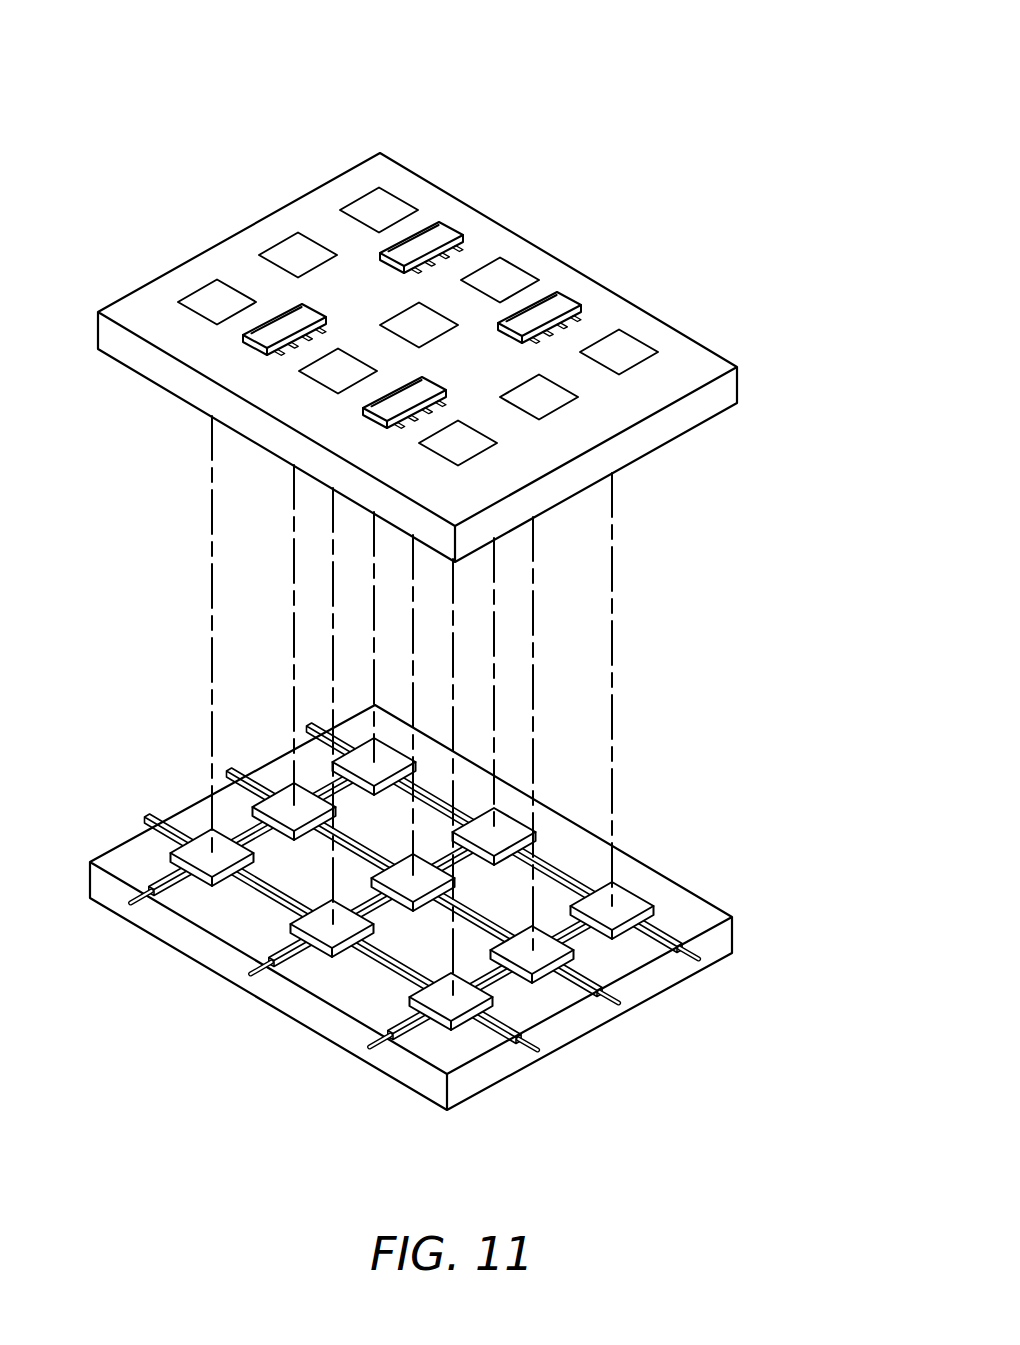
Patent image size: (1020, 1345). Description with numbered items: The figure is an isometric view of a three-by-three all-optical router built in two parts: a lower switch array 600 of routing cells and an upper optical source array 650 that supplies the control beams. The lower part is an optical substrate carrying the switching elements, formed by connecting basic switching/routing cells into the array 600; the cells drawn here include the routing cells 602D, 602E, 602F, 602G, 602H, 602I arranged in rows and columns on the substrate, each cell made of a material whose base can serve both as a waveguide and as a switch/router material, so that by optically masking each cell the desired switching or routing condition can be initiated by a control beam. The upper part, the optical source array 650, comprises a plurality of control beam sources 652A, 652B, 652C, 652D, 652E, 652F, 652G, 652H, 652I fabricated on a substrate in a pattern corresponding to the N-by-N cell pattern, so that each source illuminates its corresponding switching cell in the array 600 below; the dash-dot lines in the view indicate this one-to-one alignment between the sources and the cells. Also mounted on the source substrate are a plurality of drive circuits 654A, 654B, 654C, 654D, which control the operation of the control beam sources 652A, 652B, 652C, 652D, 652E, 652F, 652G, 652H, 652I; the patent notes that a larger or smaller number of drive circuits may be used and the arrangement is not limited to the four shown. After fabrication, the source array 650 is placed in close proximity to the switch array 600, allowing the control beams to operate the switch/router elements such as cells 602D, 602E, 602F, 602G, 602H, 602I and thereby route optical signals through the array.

The optical source array 650 is at (374, 86).
The array of routing cells 600 is at (694, 688).
The control beam source 652A is at (210, 300).
The control beam source 652B is at (293, 252).
The control beam source 652C is at (375, 204).
The control beam source 652D is at (333, 377).
The control beam source 652E is at (413, 323).
The control beam source 652F is at (498, 273).
The control beam source 652G is at (457, 442).
The control beam source 652H is at (542, 397).
The control beam source 652I is at (622, 352).
The drive circuit 654A is at (243, 343).
The drive circuit 654B is at (438, 232).
The drive circuit 654C is at (412, 390).
The drive circuit 654D is at (558, 310).
The routing cell 602D is at (327, 908).
The routing cell 602E is at (408, 867).
The routing cell 602F is at (502, 822).
The routing cell 602G is at (446, 985).
The routing cell 602H is at (527, 928).
The routing cell 602I is at (623, 887).